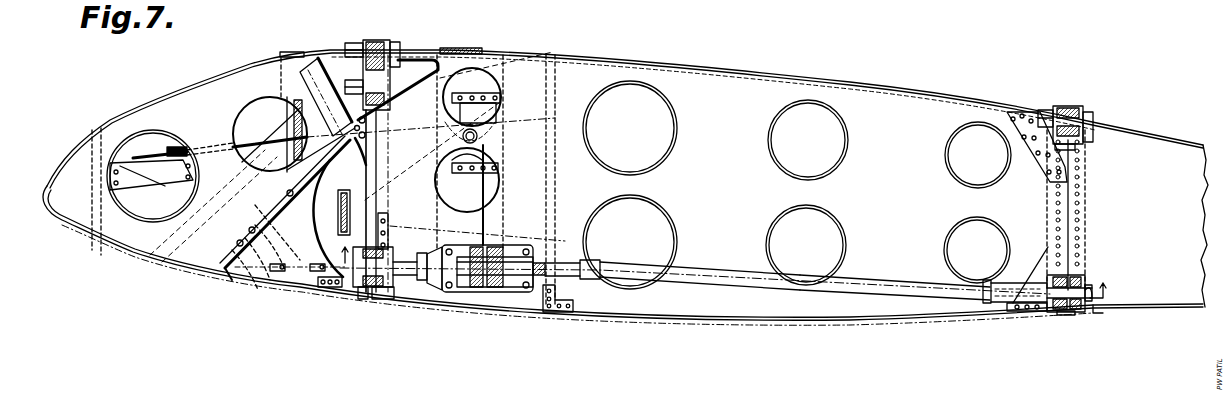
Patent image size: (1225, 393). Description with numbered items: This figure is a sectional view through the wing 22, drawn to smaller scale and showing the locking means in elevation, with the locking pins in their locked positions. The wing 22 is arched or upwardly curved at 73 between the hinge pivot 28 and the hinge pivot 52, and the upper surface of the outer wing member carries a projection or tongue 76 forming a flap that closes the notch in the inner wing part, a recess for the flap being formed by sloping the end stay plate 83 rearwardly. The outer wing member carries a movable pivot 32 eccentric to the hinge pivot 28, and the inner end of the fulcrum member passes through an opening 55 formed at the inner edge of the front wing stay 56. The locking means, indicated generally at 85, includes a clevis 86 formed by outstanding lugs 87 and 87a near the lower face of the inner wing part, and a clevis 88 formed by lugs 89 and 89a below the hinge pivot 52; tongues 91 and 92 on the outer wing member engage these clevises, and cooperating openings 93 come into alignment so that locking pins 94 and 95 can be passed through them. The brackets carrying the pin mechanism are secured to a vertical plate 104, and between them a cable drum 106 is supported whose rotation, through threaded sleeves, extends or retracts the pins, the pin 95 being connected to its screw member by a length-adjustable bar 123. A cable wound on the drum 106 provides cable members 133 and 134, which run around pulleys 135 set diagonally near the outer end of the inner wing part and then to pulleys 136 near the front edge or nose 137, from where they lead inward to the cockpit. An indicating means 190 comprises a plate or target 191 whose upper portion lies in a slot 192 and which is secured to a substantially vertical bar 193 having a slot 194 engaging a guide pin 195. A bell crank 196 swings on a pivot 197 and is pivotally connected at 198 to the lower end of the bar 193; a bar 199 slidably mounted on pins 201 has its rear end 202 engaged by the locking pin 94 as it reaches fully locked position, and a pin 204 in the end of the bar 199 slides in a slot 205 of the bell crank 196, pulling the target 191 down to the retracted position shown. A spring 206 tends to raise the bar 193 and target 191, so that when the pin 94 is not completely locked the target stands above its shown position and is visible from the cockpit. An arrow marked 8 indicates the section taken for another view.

The direction arrow 8 is at (723, 273).
The wing 22 is at (877, 100).
The hinge pivot 28 is at (394, 50).
The movable pivot 32 is at (340, 210).
The hinge pivot 52 is at (1066, 114).
The opening 55 is at (266, 291).
The front wing stay 56 is at (137, 121).
The arched portion 73 is at (683, 62).
The projection or tongue 76 is at (478, 50).
The end stay plate 83 is at (755, 100).
The drive shaft 85 is at (712, 285).
The clevis 86 is at (382, 297).
The lug 87 is at (393, 284).
The lug 87a is at (369, 292).
The clevis 88 is at (1077, 322).
The lug 89 is at (1050, 306).
The lug 89a is at (1084, 312).
The tongue 91 is at (388, 222).
The tongue 92 is at (1065, 316).
The cooperating openings 93 is at (345, 255).
The locking pin 94 is at (385, 252).
The locking pin 95 is at (1083, 288).
The vertical plate 104 is at (493, 246).
The cable drum 106 is at (550, 255).
The bar 123 is at (848, 290).
The cable member 133 is at (480, 222).
The cable member 134 is at (547, 160).
The pulleys 135 is at (478, 133).
The pulleys 136 is at (176, 146).
The front edge or nose 137 is at (115, 222).
The indicating means 190 is at (286, 49).
The plate or target 191 is at (294, 55).
The slot 192 is at (308, 62).
The vertical bar 193 is at (287, 170).
The slot 194 is at (366, 160).
The guide pin 195 is at (286, 195).
The bell crank 196 is at (245, 285).
The pivot 197 is at (249, 230).
The pivotal connection 198 is at (266, 211).
The bar 199 is at (250, 298).
The pins 201 is at (318, 281).
The rear end 202 is at (333, 291).
The pin 204 is at (226, 271).
The slot 205 is at (237, 243).
The spring 206 is at (278, 140).